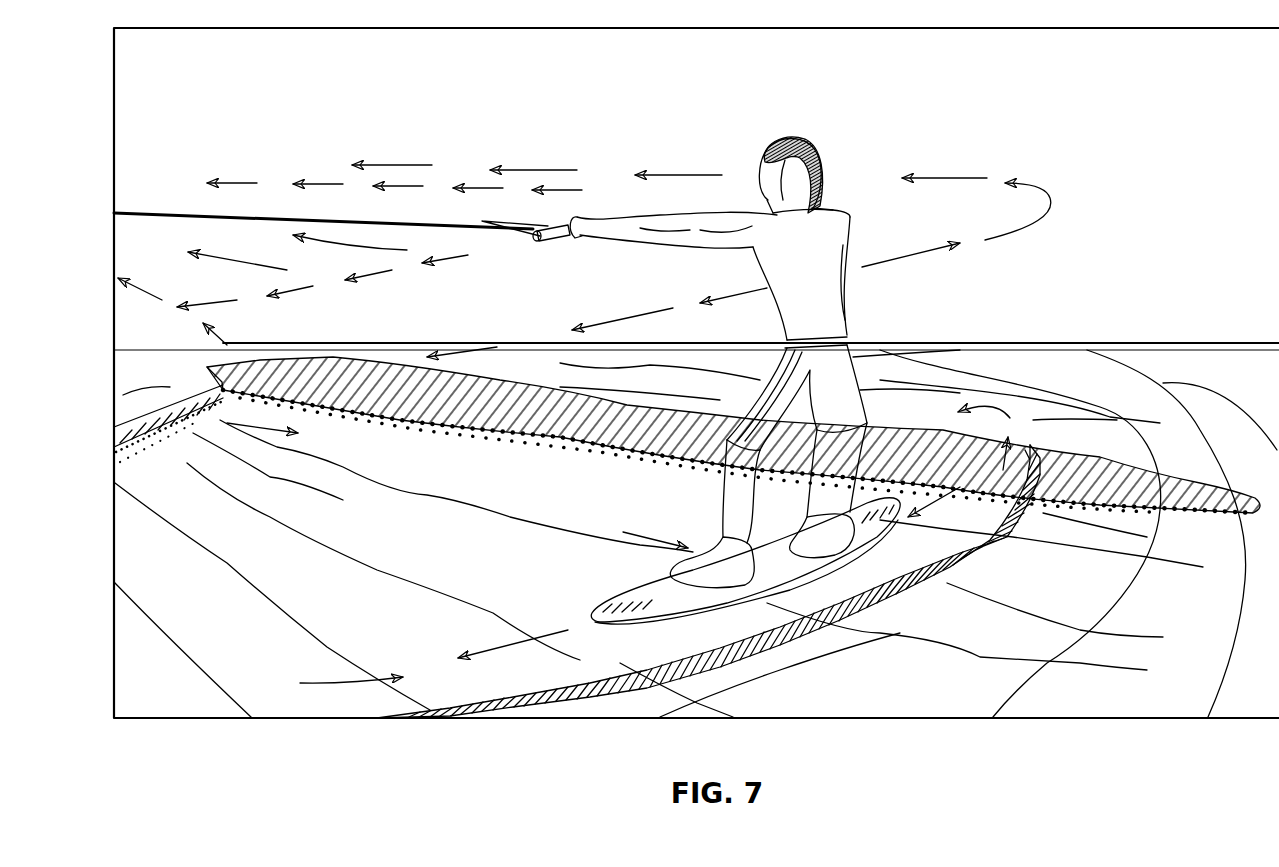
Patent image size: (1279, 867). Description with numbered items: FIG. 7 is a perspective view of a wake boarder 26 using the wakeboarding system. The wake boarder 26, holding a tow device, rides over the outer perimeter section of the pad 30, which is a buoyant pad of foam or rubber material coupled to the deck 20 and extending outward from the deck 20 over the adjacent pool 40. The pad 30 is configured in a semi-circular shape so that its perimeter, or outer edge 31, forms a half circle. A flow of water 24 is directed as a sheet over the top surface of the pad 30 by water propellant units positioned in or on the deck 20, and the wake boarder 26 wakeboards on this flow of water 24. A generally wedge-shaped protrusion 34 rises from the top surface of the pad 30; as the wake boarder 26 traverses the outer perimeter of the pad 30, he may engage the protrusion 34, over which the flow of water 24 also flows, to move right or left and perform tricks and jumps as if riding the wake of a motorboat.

The deck 20 is at (130, 408).
The flow of water 24 is at (650, 537).
The wake boarder 26 is at (835, 230).
The pad 30 is at (543, 660).
The outer edge 31 is at (798, 610).
The protrusion 34 is at (935, 443).
The pool 40 is at (1017, 585).